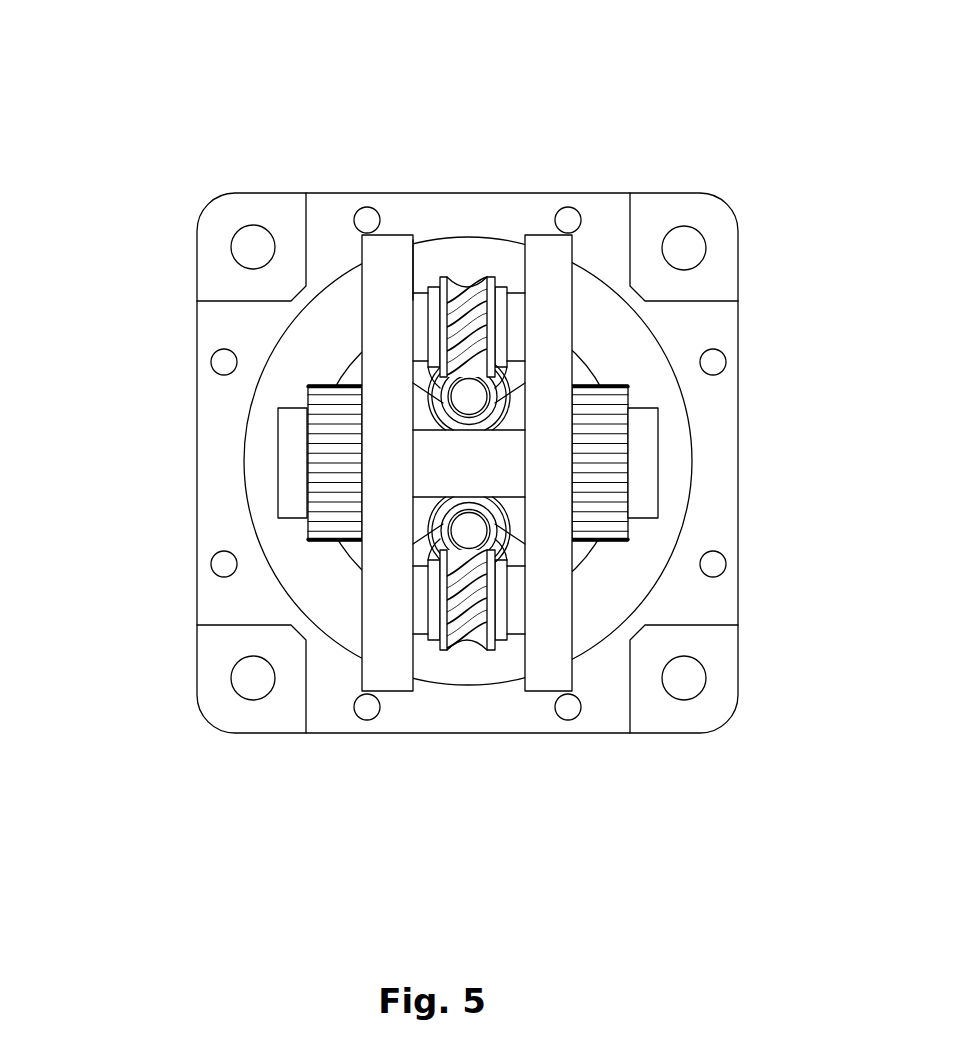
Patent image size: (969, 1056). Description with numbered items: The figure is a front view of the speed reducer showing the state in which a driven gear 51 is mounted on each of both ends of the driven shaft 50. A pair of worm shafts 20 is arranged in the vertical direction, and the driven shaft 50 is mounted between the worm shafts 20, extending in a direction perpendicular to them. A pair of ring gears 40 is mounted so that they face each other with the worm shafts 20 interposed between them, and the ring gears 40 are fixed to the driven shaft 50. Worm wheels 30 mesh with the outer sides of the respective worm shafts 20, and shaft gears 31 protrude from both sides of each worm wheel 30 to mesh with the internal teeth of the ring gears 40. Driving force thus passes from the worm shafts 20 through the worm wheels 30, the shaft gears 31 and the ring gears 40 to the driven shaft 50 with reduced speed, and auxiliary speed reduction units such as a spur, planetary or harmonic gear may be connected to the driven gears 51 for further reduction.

The worm shaft 20 is at (470, 397).
The worm wheel 30 is at (470, 290).
The shaft gear 31 is at (412, 272).
The ring gear 40 is at (375, 677).
The driven shaft 50 is at (293, 447).
The driven gear 51 is at (330, 486).